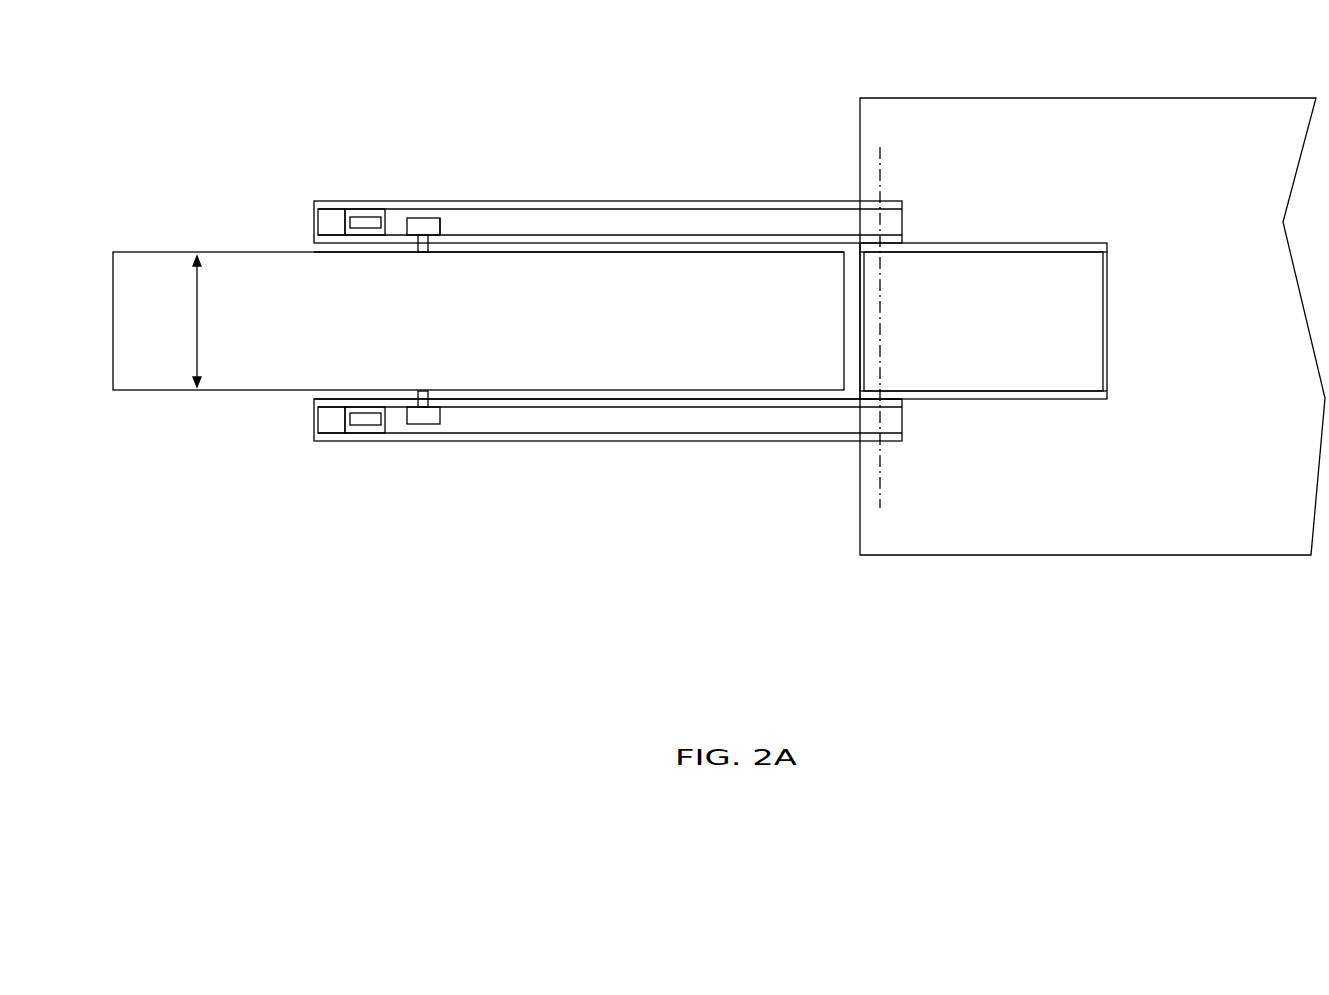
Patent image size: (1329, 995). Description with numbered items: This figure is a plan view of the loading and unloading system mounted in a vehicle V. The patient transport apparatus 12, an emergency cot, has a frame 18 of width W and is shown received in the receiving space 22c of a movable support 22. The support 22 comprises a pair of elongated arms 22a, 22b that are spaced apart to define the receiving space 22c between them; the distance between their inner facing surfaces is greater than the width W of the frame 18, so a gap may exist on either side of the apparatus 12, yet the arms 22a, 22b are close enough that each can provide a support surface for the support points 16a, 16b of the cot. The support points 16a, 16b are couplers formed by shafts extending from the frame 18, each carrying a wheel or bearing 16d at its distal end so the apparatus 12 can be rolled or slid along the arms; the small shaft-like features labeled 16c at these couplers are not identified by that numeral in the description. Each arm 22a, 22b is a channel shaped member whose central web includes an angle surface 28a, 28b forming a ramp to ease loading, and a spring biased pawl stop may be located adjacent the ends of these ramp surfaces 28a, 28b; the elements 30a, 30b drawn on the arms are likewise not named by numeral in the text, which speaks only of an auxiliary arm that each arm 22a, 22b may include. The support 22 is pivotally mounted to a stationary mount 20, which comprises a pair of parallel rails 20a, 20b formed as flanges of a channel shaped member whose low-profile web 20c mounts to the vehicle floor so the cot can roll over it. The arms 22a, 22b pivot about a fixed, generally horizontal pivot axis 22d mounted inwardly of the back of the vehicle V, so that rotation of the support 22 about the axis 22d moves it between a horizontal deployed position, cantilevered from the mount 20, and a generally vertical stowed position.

The patient transport apparatus 12 is at (633, 285).
The frame 18 is at (622, 252).
The width W is at (197, 321).
The vehicle V is at (1222, 107).
The stationary mount 20 is at (1035, 396).
The rail 20a is at (1027, 243).
The rail 20b is at (1075, 382).
The web 20c is at (1035, 401).
The support 22 is at (608, 349).
The arm 22a is at (403, 202).
The arm 22b is at (590, 442).
The receiving space 22c is at (653, 393).
The pivot axis 22d is at (877, 175).
The support point 16a is at (423, 220).
The support point 16b is at (427, 423).
The latch pin 16c is at (427, 245).
The wheel or bearing 16d is at (442, 223).
The angle surface 28a is at (322, 212).
The angle surface 28b is at (325, 423).
The upper spring 30a is at (367, 218).
The lower spring 30b is at (367, 420).